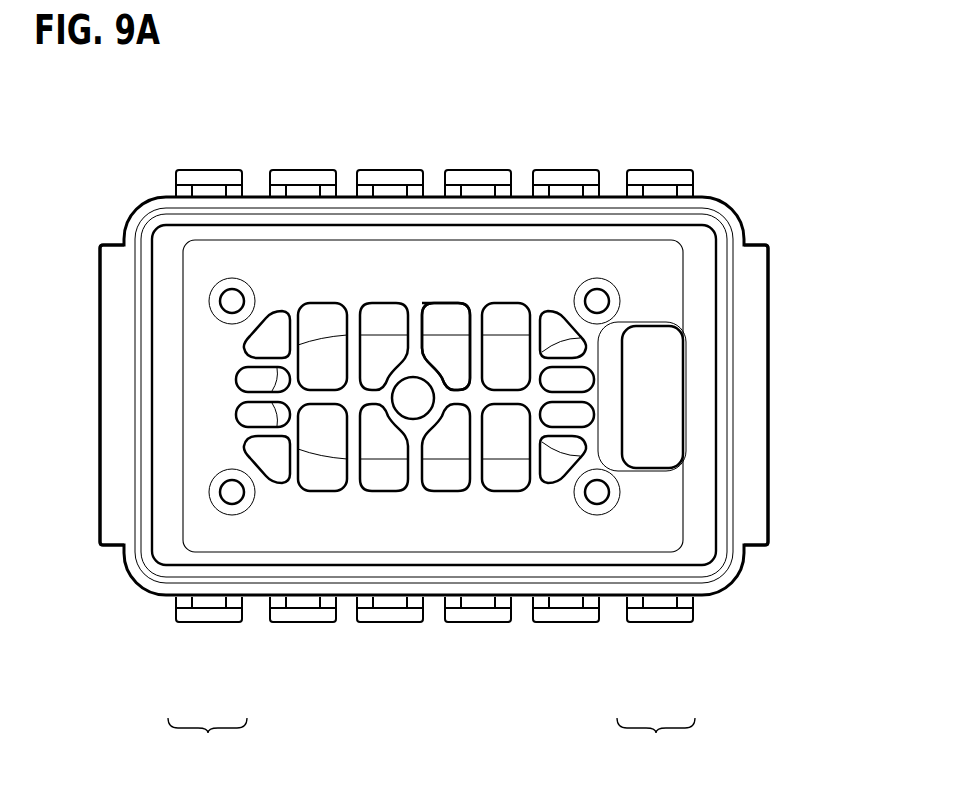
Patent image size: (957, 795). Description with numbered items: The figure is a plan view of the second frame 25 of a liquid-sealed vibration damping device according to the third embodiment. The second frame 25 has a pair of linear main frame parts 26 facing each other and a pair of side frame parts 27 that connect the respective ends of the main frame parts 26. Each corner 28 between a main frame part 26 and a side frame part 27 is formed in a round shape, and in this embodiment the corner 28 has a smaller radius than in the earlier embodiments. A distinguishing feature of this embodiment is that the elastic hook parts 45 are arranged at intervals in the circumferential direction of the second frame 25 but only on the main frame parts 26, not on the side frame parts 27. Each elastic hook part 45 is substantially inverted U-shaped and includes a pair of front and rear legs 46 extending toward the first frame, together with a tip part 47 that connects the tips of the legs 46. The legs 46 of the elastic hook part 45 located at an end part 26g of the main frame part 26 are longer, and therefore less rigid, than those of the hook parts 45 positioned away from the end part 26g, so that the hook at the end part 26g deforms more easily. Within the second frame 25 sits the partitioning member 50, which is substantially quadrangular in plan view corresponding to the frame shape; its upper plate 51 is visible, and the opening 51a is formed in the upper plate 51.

The second frame 25 is at (752, 226).
The main frame part 26 is at (433, 201).
The end part of the main frame part 26g is at (157, 188).
The side frame part 27 is at (117, 398).
The corner 28 is at (145, 212).
The elastic hook part 45 is at (207, 166).
The leg 46 is at (226, 197).
The tip part 47 is at (199, 172).
The partitioning member 50 is at (695, 276).
The upper plate 51 is at (653, 308).
The terminal cavity 51a is at (449, 306).